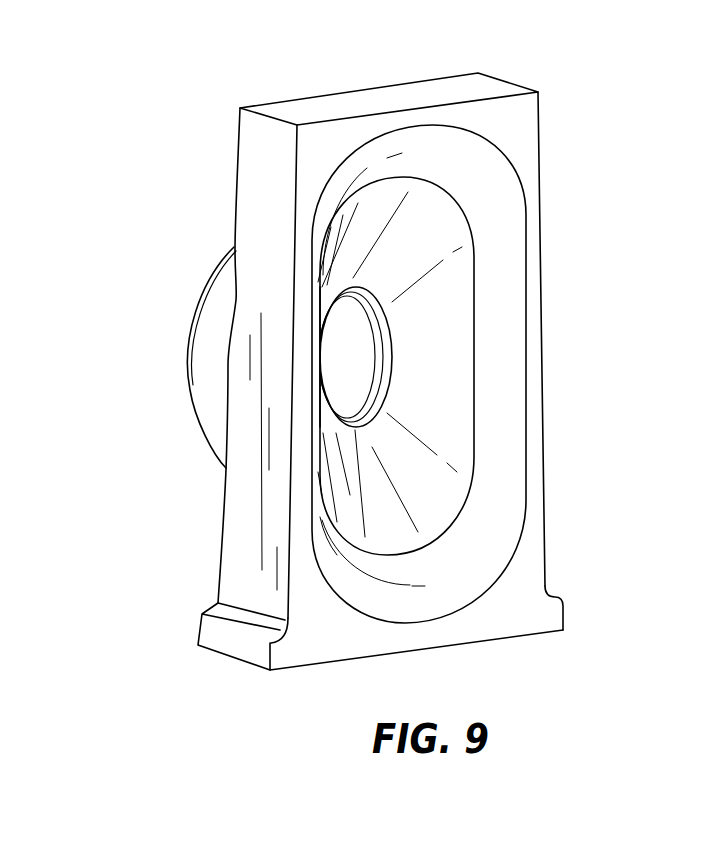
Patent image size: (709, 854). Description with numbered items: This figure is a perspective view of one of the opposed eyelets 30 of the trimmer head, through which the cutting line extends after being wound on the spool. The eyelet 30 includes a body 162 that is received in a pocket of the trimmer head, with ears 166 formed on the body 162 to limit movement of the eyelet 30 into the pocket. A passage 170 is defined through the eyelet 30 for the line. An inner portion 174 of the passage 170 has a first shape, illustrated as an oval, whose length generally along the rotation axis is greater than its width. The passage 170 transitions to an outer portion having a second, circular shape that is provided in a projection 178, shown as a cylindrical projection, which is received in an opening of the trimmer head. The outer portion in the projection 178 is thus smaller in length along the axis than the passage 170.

The eyelet 30 is at (522, 116).
The body 162 is at (528, 552).
The ears 166 is at (285, 652).
The passage 170 is at (358, 343).
The inner portion 174 is at (368, 228).
The projection 178 is at (207, 403).